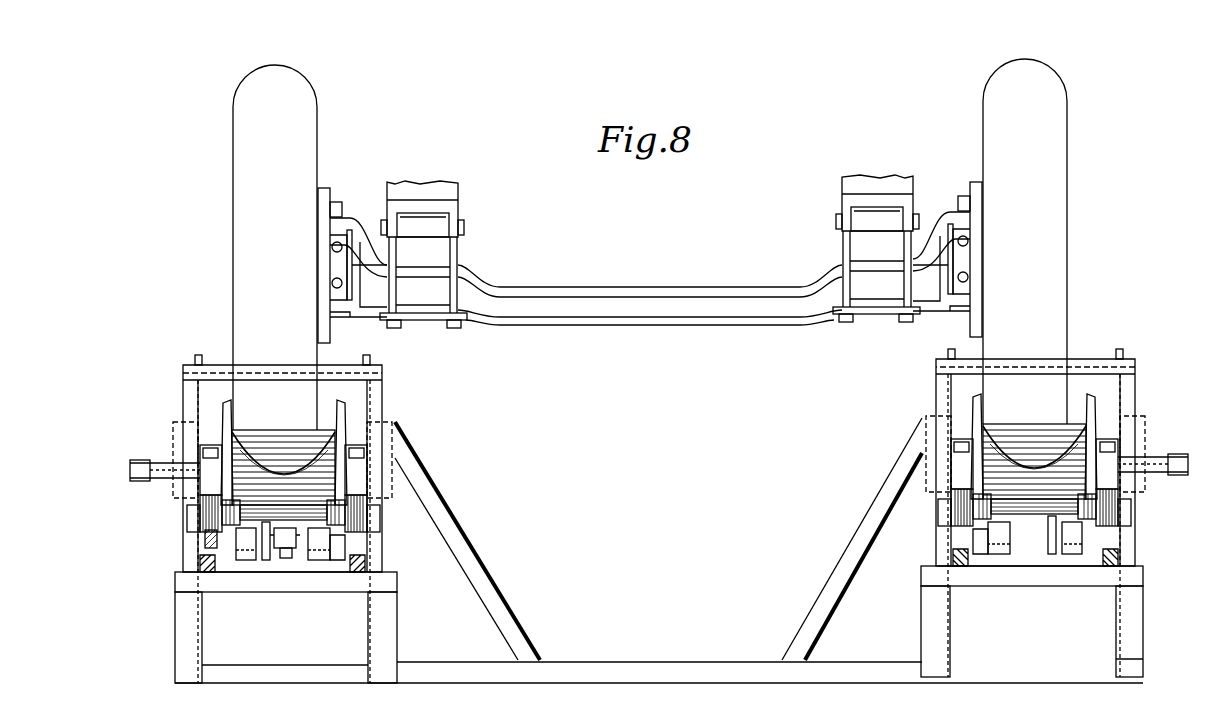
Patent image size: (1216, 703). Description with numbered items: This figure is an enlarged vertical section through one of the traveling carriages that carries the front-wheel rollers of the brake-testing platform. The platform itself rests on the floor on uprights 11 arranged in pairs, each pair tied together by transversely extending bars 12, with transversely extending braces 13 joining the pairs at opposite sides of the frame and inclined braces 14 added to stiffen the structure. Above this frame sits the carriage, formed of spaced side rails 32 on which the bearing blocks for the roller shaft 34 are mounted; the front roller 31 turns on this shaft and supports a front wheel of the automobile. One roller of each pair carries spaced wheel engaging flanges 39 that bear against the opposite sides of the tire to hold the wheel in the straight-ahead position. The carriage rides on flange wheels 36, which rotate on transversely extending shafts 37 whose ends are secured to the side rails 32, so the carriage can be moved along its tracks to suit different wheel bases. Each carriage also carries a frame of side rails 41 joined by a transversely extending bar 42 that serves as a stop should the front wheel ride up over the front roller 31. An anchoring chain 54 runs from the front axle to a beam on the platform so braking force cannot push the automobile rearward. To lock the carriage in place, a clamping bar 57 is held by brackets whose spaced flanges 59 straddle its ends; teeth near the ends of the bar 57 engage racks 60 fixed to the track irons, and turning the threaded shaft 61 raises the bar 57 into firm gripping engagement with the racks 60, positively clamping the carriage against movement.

The upright 11 is at (202, 621).
The transversely extending bar 12 is at (296, 588).
The transversely extending brace 13 is at (665, 660).
The inclined brace 14 is at (488, 572).
The front roller 31 is at (286, 430).
The side rail 32 is at (200, 505).
The roller shaft 34 is at (158, 463).
The flange wheel 36 is at (187, 527).
The transversely extending shaft 37 is at (267, 540).
The wheel engaging flange 39 is at (228, 400).
The side rail 41 is at (183, 392).
The transversely extending bar 42 is at (280, 366).
The anchoring chain 54 is at (298, 530).
The clamping bar 57 is at (340, 560).
The spaced flange 59 is at (323, 560).
The rack 60 is at (212, 540).
The threaded shaft 61 is at (1020, 528).